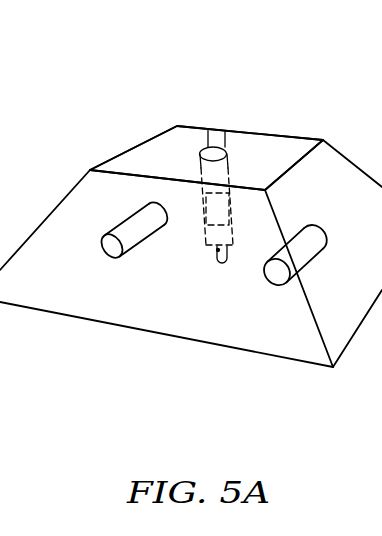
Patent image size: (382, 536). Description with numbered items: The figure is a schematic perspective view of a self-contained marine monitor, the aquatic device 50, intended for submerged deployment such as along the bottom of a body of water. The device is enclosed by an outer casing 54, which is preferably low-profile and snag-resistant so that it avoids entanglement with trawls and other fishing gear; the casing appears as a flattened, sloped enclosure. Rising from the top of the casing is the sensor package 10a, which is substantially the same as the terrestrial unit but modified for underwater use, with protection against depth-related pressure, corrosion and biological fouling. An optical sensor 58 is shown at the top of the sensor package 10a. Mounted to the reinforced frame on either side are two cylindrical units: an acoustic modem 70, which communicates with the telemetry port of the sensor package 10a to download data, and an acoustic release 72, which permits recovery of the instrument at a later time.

The aquatic device 50 is at (160, 60).
The outer casing 54 is at (100, 153).
The optical sensor 58 is at (211, 132).
The sensor package 10a is at (228, 140).
The acoustic modem 70 is at (277, 280).
The acoustic release 72 is at (110, 250).